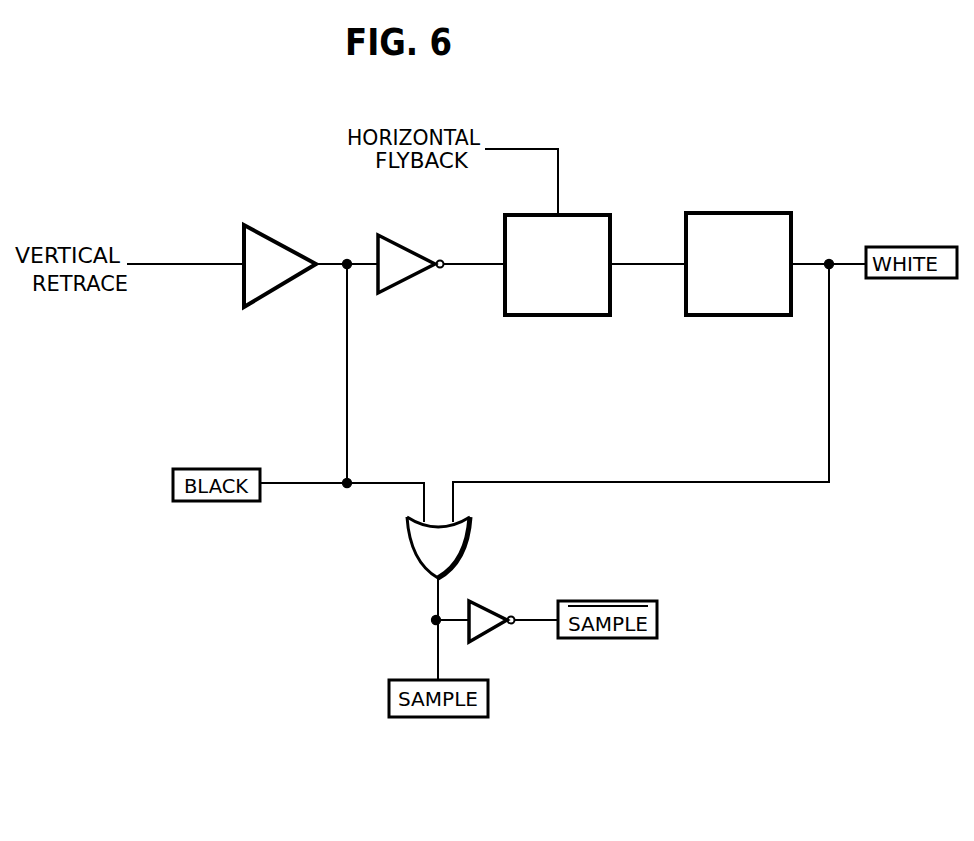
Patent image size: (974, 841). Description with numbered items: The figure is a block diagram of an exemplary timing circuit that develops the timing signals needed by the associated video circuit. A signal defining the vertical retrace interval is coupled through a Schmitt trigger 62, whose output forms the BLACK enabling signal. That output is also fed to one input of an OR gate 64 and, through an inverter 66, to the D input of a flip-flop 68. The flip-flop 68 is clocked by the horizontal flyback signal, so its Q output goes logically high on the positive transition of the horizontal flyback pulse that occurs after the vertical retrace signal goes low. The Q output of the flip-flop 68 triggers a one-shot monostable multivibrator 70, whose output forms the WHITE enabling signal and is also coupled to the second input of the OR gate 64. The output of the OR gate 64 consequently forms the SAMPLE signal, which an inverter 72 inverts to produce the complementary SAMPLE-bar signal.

The Schmitt trigger 62 is at (262, 290).
The OR gate 64 is at (455, 553).
The inverter 66 is at (395, 280).
The flip-flop 68 is at (530, 310).
The one-shot monostable multivibrator 70 is at (737, 222).
The inverter 72 is at (483, 633).